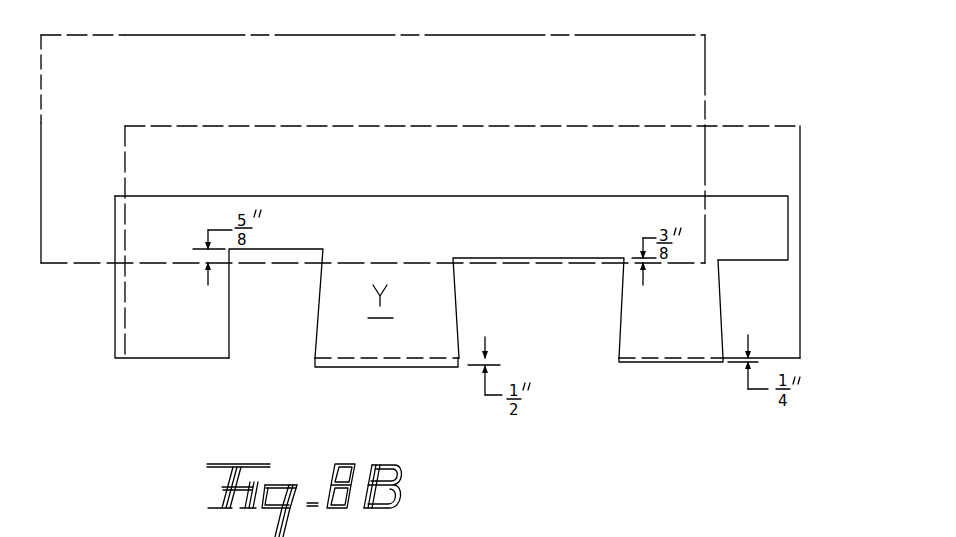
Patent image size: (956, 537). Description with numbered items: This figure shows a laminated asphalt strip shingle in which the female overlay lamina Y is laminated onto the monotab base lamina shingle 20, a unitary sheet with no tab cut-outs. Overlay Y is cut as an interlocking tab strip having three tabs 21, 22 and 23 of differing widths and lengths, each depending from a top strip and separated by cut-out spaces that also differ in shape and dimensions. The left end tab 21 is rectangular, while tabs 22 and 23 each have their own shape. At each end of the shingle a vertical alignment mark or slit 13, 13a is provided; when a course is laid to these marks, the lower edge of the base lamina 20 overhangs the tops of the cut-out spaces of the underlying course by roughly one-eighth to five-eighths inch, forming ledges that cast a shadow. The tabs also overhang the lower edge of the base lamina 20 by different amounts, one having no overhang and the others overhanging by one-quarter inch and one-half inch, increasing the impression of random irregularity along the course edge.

The vertical alignment mark 13 is at (41, 123).
The vertical alignment mark 13a is at (700, 126).
The monotab base lamina shingle 20 is at (268, 348).
The tab of overlay lamina Y 21 is at (187, 343).
The tab of overlay lamina Y 22 is at (405, 362).
The tab of overlay lamina Y 23 is at (647, 348).